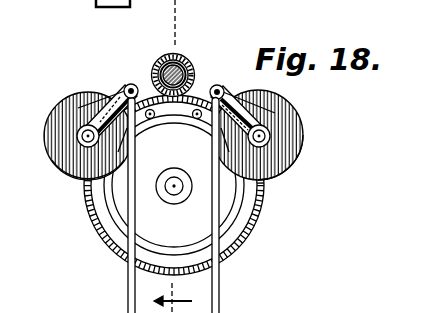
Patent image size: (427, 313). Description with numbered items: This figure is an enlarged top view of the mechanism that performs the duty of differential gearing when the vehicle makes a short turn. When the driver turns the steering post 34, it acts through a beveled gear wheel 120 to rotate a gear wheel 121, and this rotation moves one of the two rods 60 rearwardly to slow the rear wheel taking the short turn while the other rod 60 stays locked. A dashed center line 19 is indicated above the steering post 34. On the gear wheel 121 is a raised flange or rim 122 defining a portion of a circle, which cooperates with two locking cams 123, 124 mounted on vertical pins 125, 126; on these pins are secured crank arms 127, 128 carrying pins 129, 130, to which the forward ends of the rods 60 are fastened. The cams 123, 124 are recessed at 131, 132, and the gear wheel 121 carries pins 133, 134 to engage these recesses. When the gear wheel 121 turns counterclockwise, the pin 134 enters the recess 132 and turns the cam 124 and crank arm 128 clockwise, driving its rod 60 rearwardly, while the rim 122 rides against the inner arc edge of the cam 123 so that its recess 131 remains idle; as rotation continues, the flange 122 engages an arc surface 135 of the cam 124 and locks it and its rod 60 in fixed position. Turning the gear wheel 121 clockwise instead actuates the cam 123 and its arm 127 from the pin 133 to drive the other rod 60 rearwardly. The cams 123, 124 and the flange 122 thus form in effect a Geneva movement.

The center line 19 is at (191, 23).
The steering post 34 is at (157, 63).
The rods 60 is at (128, 277).
The beveled gear wheel 120 is at (187, 60).
The gear wheel 121 is at (259, 216).
The raised flange 122 is at (110, 214).
The locking cam 123 is at (302, 136).
The locking cam 124 is at (73, 176).
The vertical pin 125 is at (292, 160).
The vertical pin 126 is at (70, 145).
The crank arm 127 is at (292, 93).
The crank arm 128 is at (104, 101).
The pin 129 is at (218, 85).
The pin 130 is at (126, 86).
The recess 131 is at (224, 139).
The recess 132 is at (124, 148).
The pin 133 is at (197, 119).
The pin 134 is at (150, 119).
The arc surface 135 is at (78, 108).